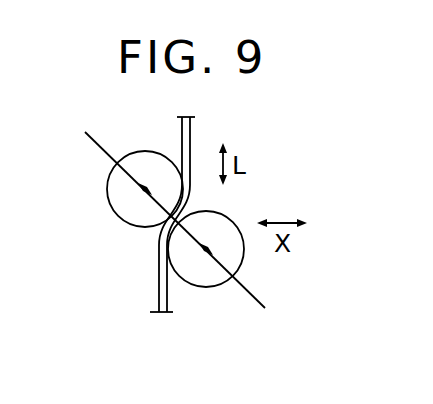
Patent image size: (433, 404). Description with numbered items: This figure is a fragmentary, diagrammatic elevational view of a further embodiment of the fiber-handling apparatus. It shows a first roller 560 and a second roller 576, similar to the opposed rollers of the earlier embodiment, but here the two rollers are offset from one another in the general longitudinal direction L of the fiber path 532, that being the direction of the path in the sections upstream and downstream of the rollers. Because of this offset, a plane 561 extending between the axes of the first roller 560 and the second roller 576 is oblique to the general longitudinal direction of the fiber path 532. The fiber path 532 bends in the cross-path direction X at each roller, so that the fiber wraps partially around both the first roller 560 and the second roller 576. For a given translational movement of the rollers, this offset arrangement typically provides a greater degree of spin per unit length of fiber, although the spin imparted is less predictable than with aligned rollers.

The fiber path 532 is at (193, 133).
The first roller 560 is at (150, 138).
The plane extending between the axes of the rollers 561 is at (93, 148).
The second roller 576 is at (228, 213).